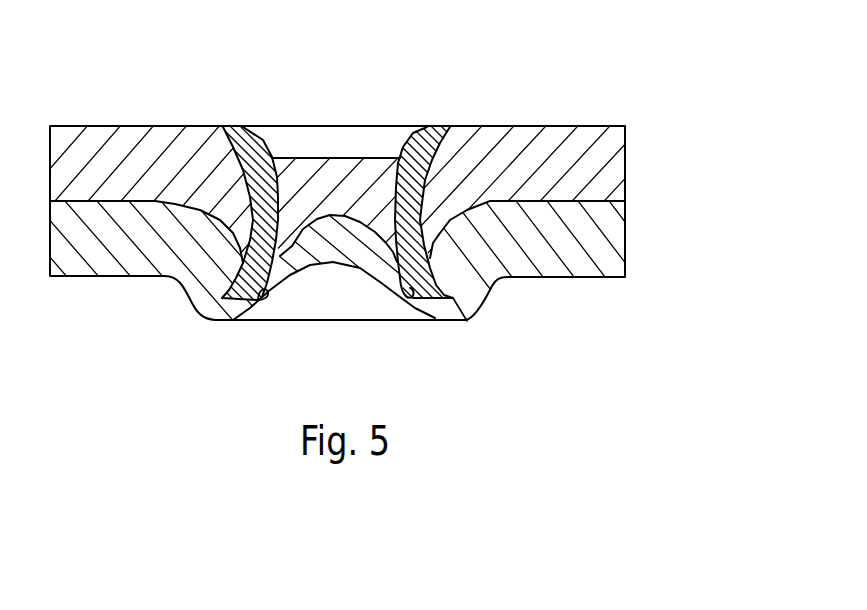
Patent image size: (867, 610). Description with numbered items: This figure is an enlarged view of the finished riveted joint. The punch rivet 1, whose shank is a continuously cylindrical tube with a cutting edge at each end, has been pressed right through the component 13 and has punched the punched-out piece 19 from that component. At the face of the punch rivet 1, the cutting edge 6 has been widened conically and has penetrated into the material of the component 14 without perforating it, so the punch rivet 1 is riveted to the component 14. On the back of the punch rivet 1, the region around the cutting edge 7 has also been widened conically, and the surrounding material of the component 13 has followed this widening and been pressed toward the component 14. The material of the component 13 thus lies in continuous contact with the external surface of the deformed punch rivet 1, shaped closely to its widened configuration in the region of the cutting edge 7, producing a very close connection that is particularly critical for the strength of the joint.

The punch rivet 1 is at (428, 232).
The cutting edge 6 is at (448, 300).
The cutting edge 7 is at (448, 127).
The component 13 is at (606, 153).
The component 14 is at (604, 247).
The punched-out piece 19 is at (338, 168).